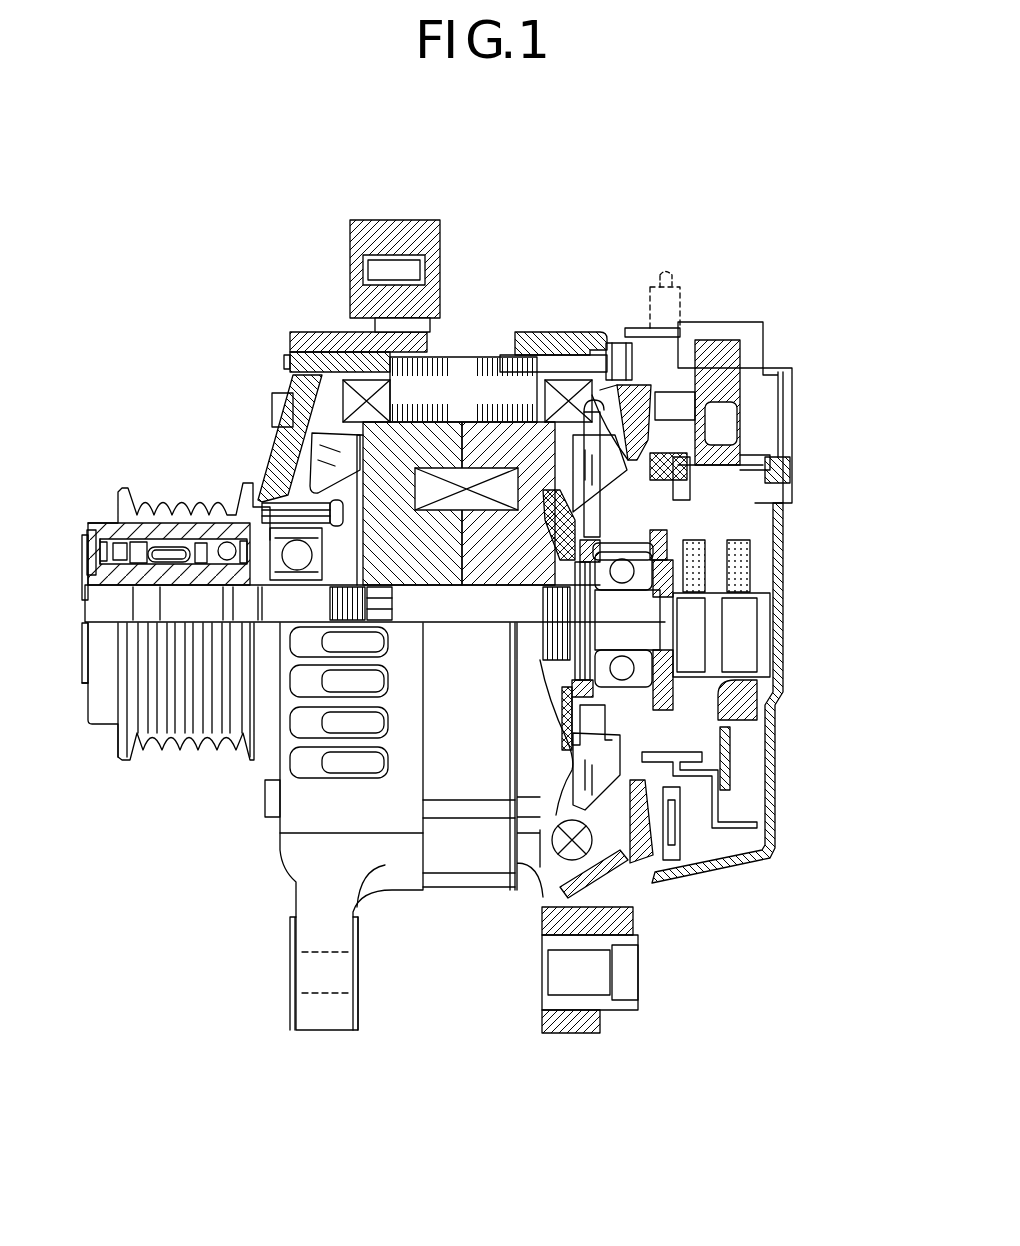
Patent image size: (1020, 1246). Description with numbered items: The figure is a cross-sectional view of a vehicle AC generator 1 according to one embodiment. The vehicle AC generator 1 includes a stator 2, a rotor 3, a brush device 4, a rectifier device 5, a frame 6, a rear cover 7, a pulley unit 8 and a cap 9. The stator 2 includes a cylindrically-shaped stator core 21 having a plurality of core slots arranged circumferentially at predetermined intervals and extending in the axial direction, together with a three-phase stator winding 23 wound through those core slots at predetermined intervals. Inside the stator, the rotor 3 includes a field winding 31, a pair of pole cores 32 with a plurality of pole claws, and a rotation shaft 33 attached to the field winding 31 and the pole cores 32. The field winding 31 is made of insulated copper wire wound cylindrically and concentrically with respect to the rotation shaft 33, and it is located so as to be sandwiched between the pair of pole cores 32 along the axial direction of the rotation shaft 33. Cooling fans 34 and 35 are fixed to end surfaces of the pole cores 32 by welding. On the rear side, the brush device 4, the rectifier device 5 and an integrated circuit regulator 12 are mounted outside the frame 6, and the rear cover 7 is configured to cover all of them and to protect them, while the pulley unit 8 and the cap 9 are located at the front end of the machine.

The vehicle AC generator 1 is at (683, 178).
The stator 2 is at (435, 285).
The stator core 21 is at (455, 392).
The three-phase stator winding 23 is at (367, 385).
The rotor 3 is at (362, 414).
The field winding 31 is at (463, 480).
The pole cores 32 is at (362, 470).
The rotation shaft 33 is at (252, 624).
The cooling fan 34 is at (333, 462).
The cooling fan 35 is at (605, 455).
The brush device 4 is at (767, 522).
The rectifier device 5 is at (736, 805).
The frame 6 is at (310, 870).
The rear cover 7 is at (760, 860).
The pulley unit 8 is at (157, 494).
The cap 9 is at (83, 677).
The IC regulator 12 is at (745, 413).